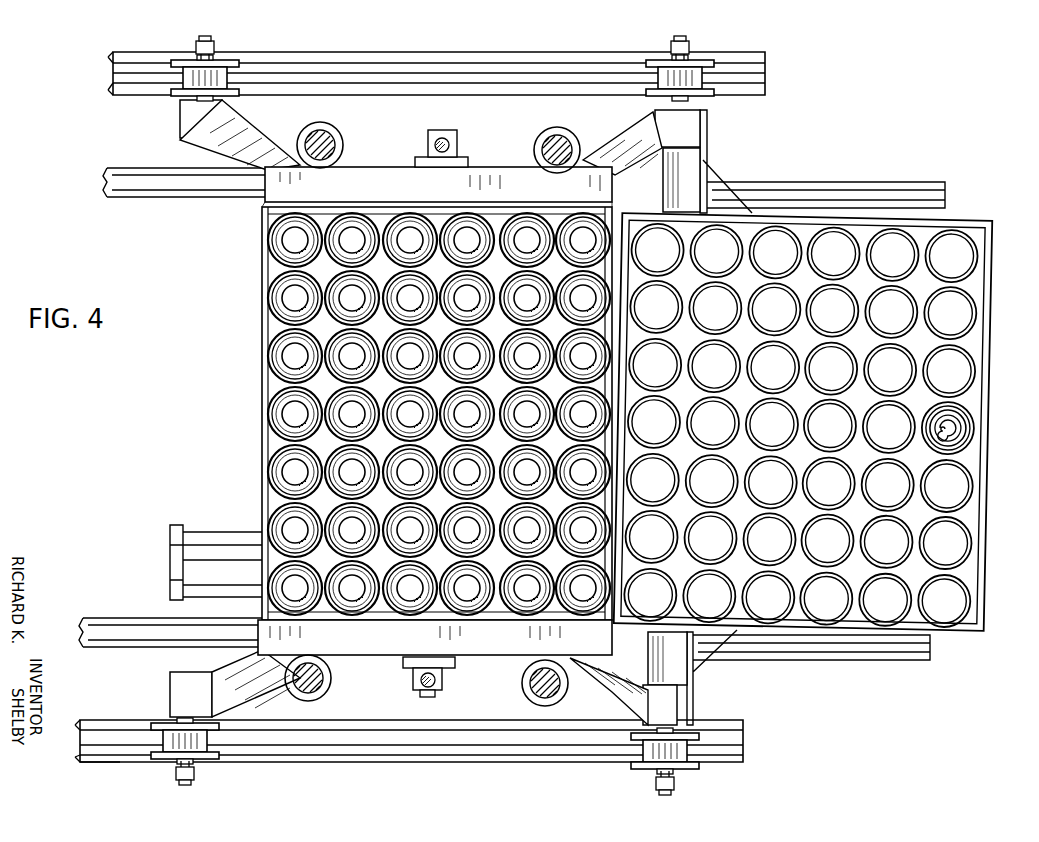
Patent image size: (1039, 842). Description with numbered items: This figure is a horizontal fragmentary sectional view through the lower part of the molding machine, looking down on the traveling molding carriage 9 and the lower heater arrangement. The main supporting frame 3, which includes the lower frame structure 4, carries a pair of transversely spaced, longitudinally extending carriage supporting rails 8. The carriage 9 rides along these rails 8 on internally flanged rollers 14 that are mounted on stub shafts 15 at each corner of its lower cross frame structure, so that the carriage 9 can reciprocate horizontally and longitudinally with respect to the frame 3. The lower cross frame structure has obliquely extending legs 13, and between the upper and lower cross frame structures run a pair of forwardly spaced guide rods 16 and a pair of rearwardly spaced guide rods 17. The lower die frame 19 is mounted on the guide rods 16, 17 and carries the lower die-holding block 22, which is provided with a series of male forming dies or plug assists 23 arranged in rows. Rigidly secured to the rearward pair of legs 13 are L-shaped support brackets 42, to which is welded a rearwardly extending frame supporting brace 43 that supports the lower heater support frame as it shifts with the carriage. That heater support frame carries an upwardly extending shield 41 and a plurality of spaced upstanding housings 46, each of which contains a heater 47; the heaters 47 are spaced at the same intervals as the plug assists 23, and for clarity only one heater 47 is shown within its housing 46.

The supporting frame 3 is at (124, 760).
The lower frame structure 4 is at (168, 94).
The carriage supporting rails 8 is at (414, 66).
The molding carriage 9 is at (256, 236).
The obliquely extending legs 13 is at (627, 145).
The internally flanged rollers 14 is at (706, 78).
The stub shafts 15 is at (210, 45).
The forwardly spaced guide rods 16 is at (336, 135).
The rearwardly spaced guide rods 17 is at (540, 138).
The lower die frame 19 is at (478, 668).
The lower die-holding block 22 is at (270, 378).
The plug assists 23 is at (295, 297).
The shield 41 is at (826, 422).
The L-shaped support brackets 42 is at (700, 170).
The frame supporting brace 43 is at (747, 176).
The housings 46 is at (984, 332).
The heater 47 is at (975, 426).